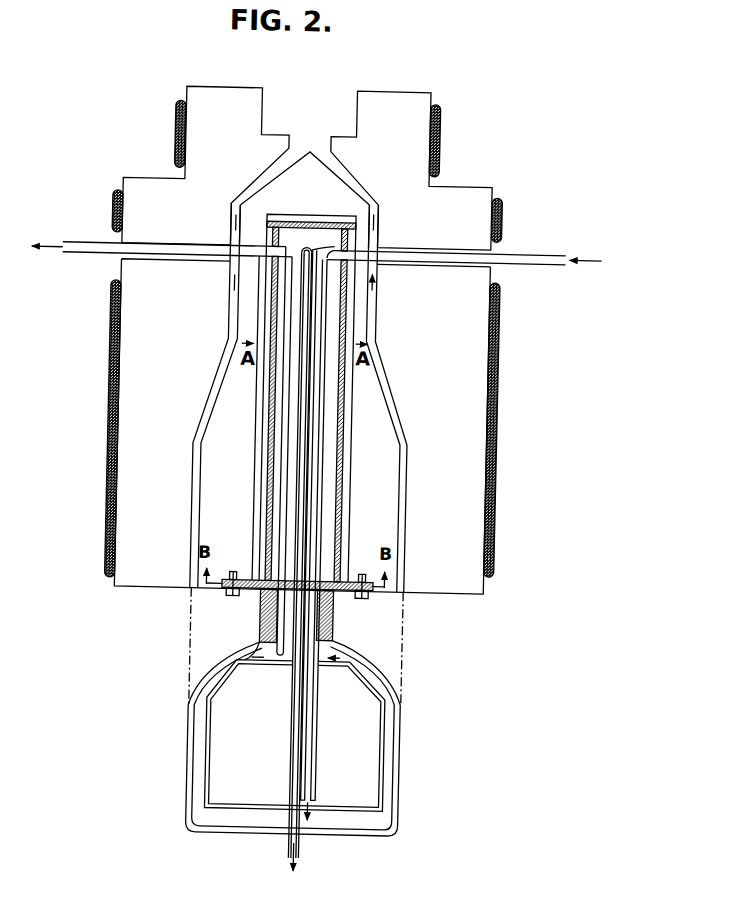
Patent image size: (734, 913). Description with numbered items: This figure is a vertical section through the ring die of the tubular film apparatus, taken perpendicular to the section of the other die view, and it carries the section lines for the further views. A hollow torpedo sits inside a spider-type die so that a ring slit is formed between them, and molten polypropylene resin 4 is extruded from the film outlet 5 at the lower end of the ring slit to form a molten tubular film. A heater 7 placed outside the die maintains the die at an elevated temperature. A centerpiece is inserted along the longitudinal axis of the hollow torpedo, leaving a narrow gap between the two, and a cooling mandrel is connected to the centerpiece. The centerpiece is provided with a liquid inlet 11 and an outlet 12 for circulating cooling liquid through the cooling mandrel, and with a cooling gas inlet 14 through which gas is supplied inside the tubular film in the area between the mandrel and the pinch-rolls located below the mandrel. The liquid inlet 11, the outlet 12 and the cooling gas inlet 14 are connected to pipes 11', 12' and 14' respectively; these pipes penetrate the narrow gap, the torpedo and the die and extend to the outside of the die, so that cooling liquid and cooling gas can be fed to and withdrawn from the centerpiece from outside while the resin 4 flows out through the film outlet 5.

The molten polypropylene resin 4 is at (303, 126).
The film outlet 5 is at (407, 590).
The heater 7 is at (498, 441).
The liquid inlet 11 is at (378, 536).
The pipe 11' is at (465, 238).
The outlet 12 is at (287, 434).
The pipe 12' is at (162, 273).
The cooling gas inlet 14 is at (370, 560).
The pipe 14' is at (382, 231).